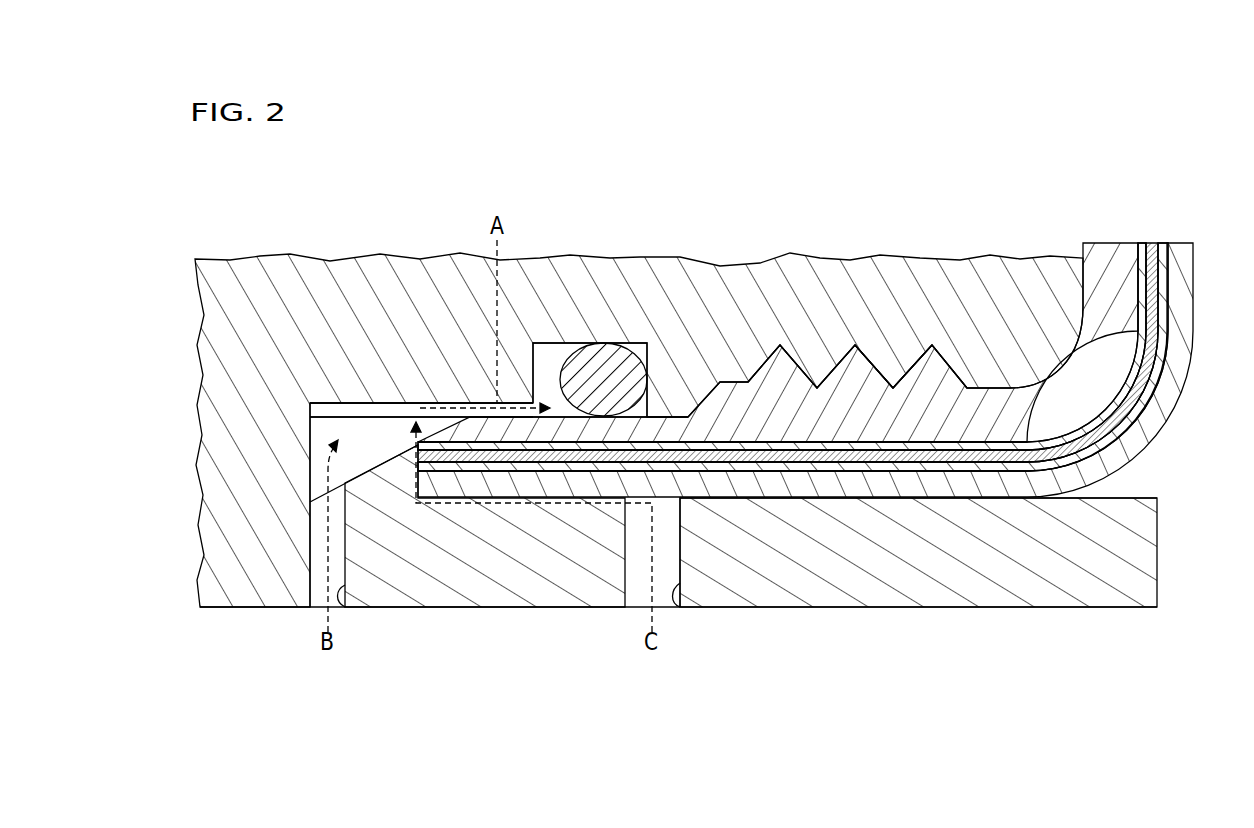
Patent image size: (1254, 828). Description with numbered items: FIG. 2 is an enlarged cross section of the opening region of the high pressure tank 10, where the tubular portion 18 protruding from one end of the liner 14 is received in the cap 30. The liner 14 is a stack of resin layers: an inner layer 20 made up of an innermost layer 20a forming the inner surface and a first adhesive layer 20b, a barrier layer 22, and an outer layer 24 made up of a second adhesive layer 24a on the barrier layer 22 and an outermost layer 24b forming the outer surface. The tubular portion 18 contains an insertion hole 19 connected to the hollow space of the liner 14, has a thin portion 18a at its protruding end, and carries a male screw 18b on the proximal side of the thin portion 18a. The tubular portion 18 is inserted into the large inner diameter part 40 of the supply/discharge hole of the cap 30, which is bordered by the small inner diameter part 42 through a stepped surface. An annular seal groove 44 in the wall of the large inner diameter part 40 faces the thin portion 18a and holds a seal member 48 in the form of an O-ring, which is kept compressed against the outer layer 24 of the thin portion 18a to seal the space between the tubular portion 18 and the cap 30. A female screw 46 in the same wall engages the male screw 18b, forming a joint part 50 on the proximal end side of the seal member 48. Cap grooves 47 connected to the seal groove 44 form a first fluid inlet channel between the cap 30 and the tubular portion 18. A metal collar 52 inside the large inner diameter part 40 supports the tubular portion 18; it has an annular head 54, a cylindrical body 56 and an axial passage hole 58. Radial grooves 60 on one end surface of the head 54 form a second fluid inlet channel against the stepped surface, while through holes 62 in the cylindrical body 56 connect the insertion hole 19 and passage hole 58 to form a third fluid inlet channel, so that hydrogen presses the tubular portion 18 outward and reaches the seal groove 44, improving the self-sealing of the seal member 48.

The high pressure tank 10 is at (412, 148).
The liner 14 is at (832, 295).
The tubular portion 18 is at (1005, 380).
The thin portion 18a is at (670, 428).
The male screw 18b is at (804, 368).
The insertion hole 19 is at (990, 498).
The inner layer 20 is at (832, 311).
The innermost layer 20a is at (1165, 189).
The first adhesive layer 20b is at (1175, 254).
The barrier layer 22 is at (1152, 252).
The outer layer 24 is at (782, 300).
The second adhesive layer 24a is at (1132, 295).
The outermost layer 24b is at (1091, 250).
The cap 30 is at (216, 327).
The large inner diameter part 40 is at (327, 408).
The small inner diameter part 42 is at (250, 608).
The seal groove 44 is at (545, 343).
The female screw 46 is at (908, 373).
The cap groove 47 is at (436, 404).
The seal member 48 is at (599, 361).
The joint part 50 is at (873, 338).
The collar 52 is at (1148, 555).
The head 54 is at (388, 590).
The cylindrical body 56 is at (832, 602).
The passage hole 58 is at (775, 607).
The radial groove 60 is at (347, 612).
The through hole 62 is at (677, 612).